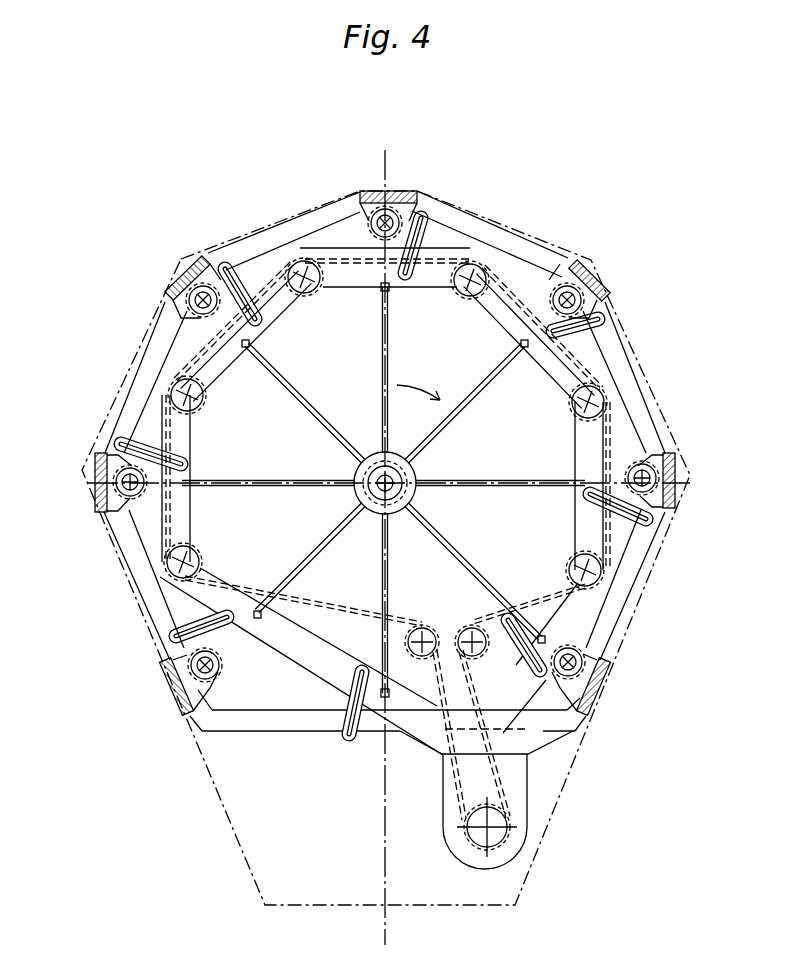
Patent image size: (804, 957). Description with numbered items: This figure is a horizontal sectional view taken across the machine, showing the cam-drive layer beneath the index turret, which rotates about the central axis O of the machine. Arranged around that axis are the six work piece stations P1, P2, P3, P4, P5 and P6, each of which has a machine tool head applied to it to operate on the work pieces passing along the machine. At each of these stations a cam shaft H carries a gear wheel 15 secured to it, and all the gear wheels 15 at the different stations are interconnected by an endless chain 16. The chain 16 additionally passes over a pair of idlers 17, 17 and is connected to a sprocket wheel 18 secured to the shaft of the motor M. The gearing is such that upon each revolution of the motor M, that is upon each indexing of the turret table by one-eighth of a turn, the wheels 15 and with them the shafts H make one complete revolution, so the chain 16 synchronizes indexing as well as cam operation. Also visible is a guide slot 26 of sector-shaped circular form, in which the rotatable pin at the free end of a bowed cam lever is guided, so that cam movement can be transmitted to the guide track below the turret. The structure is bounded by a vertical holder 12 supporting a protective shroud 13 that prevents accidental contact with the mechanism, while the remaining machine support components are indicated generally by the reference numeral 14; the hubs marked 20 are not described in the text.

The vertical holder 12 is at (677, 494).
The protective shroud 13 is at (656, 572).
The machine support components 14 is at (177, 422).
The gear wheel 15 is at (472, 265).
The endless chain 16 is at (517, 297).
The idler 17 is at (419, 626).
The sprocket wheel 18 is at (502, 810).
The bearing hub 20 is at (393, 212).
The guide slot 26 is at (225, 630).
The central axis O is at (410, 477).
The motor M is at (508, 843).
The cam shaft H is at (307, 272).
The work piece station P1 is at (133, 585).
The work piece station P2 is at (132, 377).
The work piece station P3 is at (284, 231).
The work piece station P4 is at (490, 234).
The work piece station P5 is at (624, 377).
The work piece station P6 is at (637, 585).